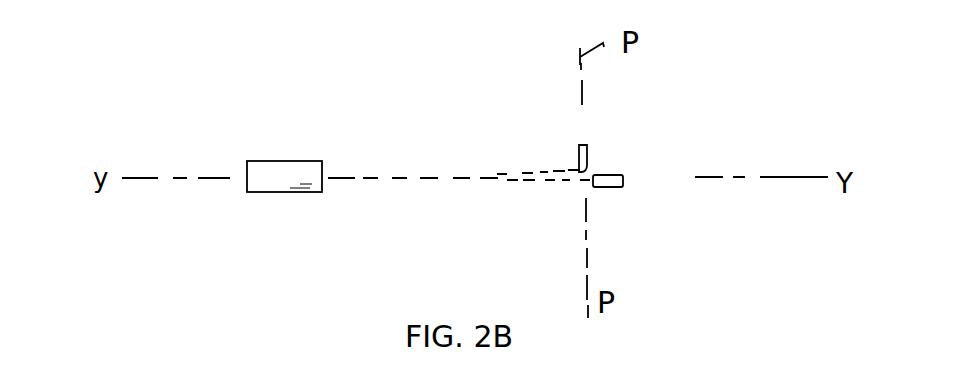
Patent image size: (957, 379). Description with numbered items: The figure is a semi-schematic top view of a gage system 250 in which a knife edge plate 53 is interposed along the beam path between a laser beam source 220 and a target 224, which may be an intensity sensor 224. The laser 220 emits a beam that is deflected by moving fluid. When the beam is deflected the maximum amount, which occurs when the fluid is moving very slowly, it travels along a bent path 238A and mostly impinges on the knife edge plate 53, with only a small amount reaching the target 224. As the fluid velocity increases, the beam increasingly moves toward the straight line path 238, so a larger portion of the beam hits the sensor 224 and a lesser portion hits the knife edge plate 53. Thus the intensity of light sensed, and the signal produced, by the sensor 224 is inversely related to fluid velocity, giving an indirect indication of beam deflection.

The laser beam source 220 is at (277, 160).
The target / intensity sensor 224 is at (606, 187).
The straight line path 238 is at (528, 183).
The bent path 238A is at (526, 167).
The knife edge plate 53 is at (583, 144).
The gage system 250 is at (325, 229).